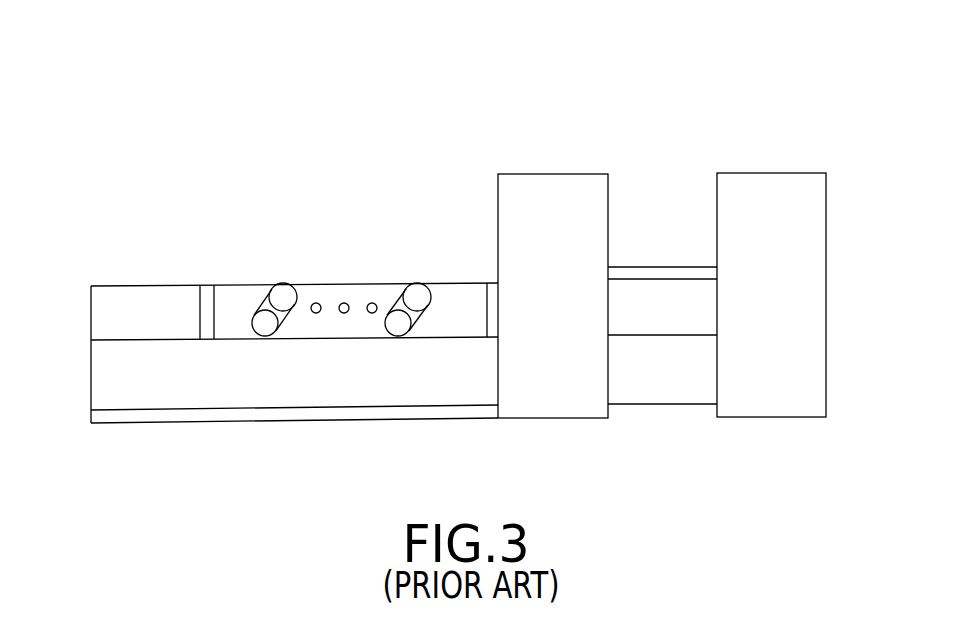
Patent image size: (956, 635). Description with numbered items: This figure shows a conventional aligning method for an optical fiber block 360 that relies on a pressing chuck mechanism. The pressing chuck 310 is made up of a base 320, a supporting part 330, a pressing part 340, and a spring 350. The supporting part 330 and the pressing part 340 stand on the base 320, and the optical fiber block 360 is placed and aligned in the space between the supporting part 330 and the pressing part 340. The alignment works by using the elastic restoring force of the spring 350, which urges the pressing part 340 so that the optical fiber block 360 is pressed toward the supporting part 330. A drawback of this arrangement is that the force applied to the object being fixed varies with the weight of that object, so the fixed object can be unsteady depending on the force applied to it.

The pressing chuck 310 is at (667, 82).
The base 320 is at (102, 360).
The supporting part 330 is at (759, 185).
The pressing part 340 is at (545, 186).
The spring 350 is at (293, 286).
The optical fiber block 360 is at (662, 272).